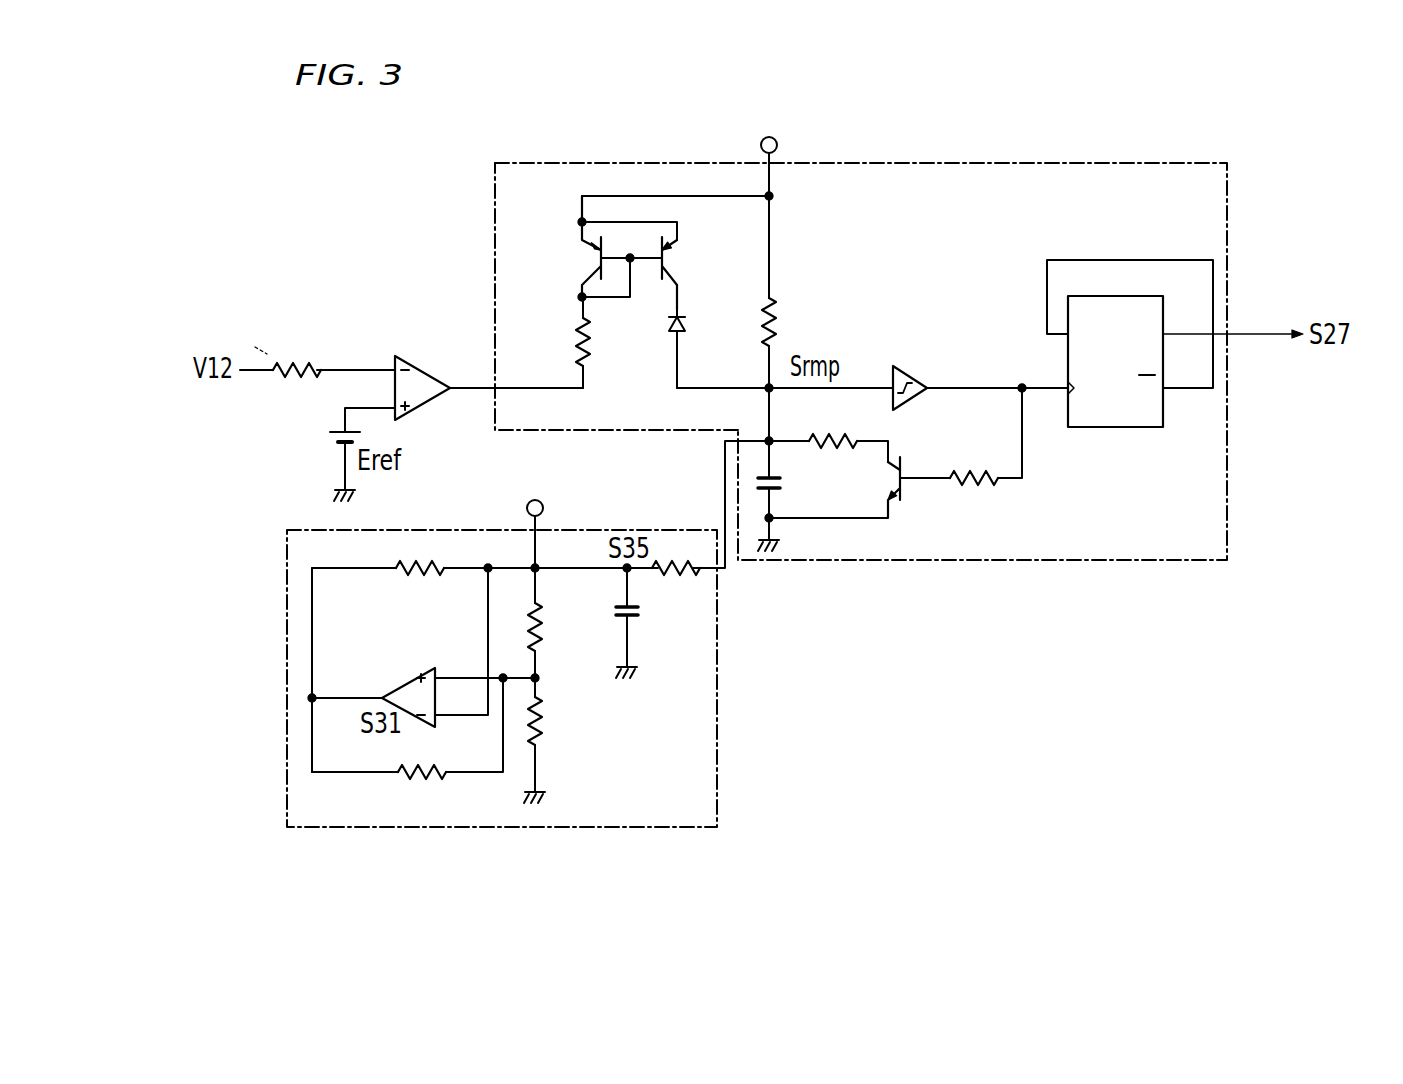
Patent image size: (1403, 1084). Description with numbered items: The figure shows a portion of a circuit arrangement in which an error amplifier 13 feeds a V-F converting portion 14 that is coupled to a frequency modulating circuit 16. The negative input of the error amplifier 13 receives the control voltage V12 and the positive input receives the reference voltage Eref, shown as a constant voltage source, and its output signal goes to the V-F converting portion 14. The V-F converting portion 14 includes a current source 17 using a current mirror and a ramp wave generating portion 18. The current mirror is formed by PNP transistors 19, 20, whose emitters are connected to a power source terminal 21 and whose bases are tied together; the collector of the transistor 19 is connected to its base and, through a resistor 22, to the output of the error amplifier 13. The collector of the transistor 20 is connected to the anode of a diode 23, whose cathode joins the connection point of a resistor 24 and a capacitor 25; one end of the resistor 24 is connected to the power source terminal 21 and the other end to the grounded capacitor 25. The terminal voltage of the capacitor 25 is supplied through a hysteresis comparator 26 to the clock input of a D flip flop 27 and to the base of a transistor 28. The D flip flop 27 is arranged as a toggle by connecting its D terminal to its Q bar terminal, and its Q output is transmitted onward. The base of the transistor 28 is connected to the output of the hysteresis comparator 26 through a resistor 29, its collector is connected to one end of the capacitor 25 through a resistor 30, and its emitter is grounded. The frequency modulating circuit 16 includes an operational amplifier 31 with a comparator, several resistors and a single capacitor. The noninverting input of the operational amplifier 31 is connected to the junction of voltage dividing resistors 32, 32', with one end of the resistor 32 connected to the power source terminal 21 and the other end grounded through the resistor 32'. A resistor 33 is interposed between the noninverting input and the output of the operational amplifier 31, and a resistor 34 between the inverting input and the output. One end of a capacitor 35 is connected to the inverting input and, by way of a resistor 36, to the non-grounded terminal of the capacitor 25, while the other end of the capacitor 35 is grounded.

The error amplifier 13 is at (418, 356).
The V-F converting portion 14 is at (1227, 470).
The frequency modulating circuit 16 is at (717, 745).
The current source 17 is at (685, 178).
The ramp wave generating portion 18 is at (908, 288).
The PNP transistor 19 is at (580, 243).
The PNP transistor 20 is at (680, 272).
The power source terminal 21 is at (778, 143).
The resistor 22 is at (578, 360).
The diode 23 is at (672, 332).
The resistor 24 is at (780, 318).
The capacitor 25 is at (782, 484).
The hysteresis comparator 26 is at (905, 378).
The D flip flop 27 is at (1112, 427).
The transistor 28 is at (905, 500).
The resistor 29 is at (970, 486).
The resistor 30 is at (826, 436).
The operational amplifier 31 is at (410, 680).
The voltage dividing resistor 32 is at (563, 644).
The voltage dividing resistor 32' is at (567, 740).
The resistor 33 is at (416, 785).
The resistor 34 is at (405, 580).
The capacitor 35 is at (633, 620).
The resistor 36 is at (675, 590).